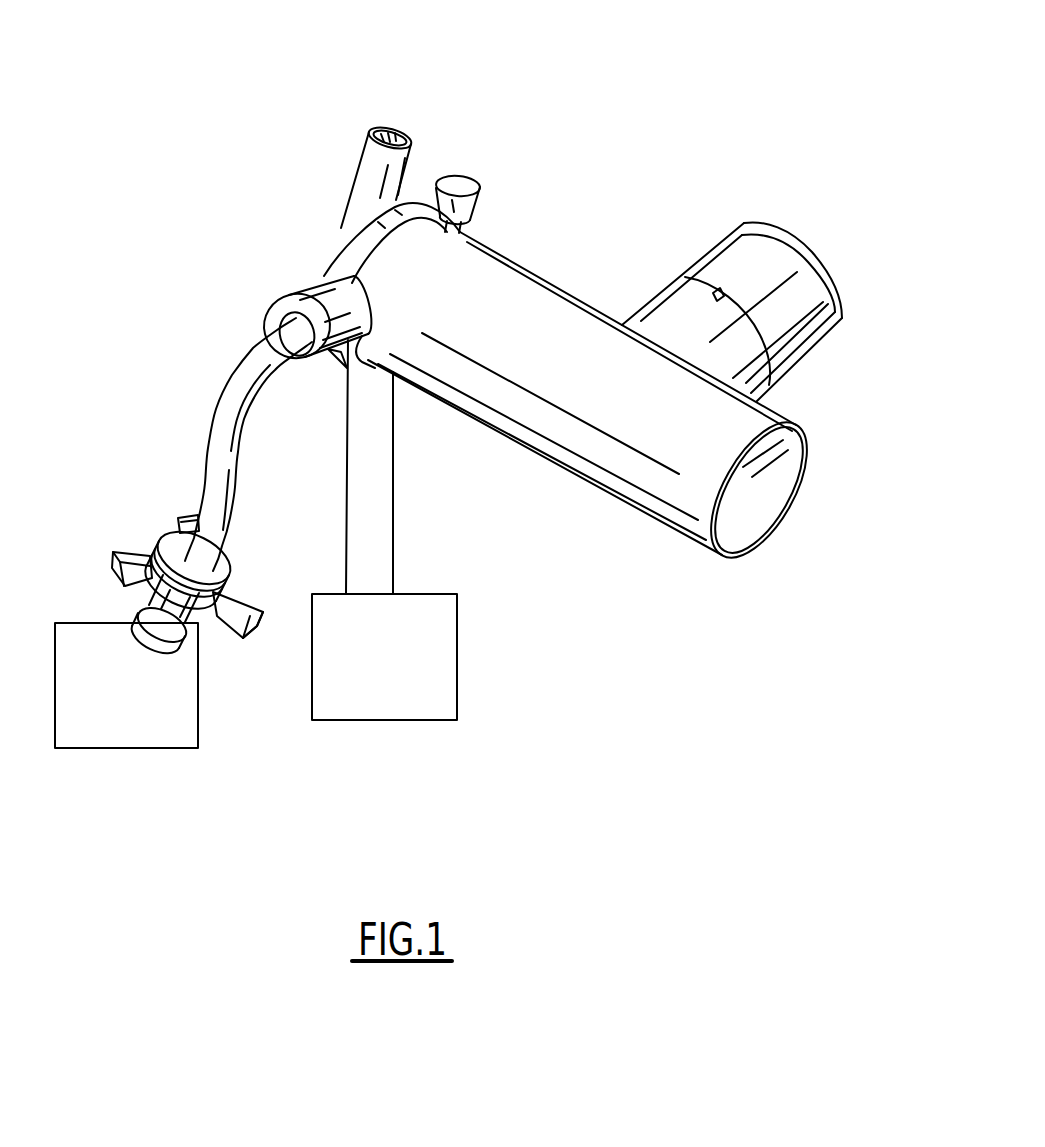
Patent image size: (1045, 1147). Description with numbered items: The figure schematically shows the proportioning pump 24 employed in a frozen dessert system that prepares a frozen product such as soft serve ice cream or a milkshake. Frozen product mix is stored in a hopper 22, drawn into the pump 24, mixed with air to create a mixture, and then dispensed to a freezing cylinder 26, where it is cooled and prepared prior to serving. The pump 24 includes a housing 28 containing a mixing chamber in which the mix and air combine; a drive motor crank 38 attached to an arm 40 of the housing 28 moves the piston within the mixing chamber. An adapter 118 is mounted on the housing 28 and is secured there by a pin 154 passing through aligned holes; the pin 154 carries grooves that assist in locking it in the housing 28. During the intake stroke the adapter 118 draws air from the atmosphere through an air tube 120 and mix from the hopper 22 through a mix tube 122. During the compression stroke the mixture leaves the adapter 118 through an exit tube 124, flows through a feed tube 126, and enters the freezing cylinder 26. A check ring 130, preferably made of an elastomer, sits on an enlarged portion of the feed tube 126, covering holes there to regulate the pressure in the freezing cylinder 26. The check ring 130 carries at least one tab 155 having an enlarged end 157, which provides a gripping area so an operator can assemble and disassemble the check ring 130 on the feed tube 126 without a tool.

The proportioning pump 24 is at (698, 80).
The housing 28 is at (667, 497).
The drive motor crank 38 is at (737, 263).
The arm 40 is at (667, 318).
The adapter 118 is at (342, 247).
The air tube 120 is at (357, 175).
The mix tube 122 is at (380, 540).
The exit tube 124 is at (290, 295).
The feed tube 126 is at (222, 403).
The check ring 130 is at (135, 563).
The pin 154 is at (462, 185).
The tab 155 is at (240, 600).
The enlarged end 157 is at (257, 640).
The hopper 22 is at (398, 679).
The freezing cylinder 26 is at (141, 707).